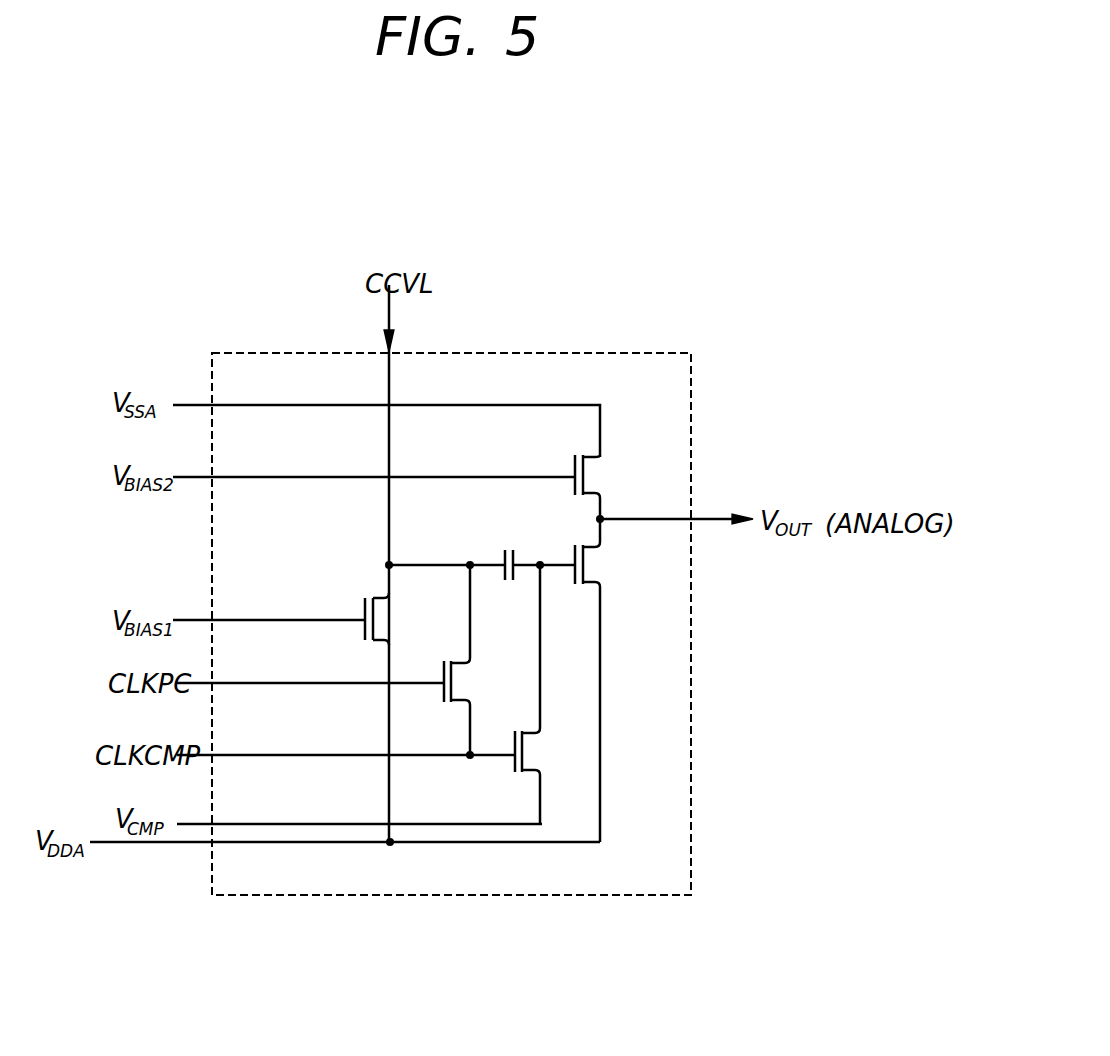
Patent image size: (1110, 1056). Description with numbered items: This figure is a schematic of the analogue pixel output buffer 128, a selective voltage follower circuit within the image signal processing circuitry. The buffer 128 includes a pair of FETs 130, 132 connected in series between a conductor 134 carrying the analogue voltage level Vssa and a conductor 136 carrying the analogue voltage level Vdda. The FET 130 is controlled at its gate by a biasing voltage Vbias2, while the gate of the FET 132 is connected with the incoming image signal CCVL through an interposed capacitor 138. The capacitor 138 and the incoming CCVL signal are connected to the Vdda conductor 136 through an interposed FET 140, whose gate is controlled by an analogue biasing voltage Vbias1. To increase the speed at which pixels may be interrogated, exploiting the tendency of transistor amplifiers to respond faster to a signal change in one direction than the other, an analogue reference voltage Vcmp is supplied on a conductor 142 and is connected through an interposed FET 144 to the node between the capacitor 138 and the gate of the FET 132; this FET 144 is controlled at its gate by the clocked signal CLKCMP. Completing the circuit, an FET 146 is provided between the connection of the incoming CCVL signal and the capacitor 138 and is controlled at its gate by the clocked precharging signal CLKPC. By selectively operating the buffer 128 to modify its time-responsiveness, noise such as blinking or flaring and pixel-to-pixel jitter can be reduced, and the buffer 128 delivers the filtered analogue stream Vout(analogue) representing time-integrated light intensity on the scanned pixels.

The analogue pixel output buffer 128 is at (458, 352).
The FET 130 is at (600, 475).
The FET 132 is at (572, 546).
The conductor 134 is at (468, 404).
The conductor 136 is at (532, 842).
The capacitor 138 is at (498, 548).
The FET 140 is at (375, 592).
The conductor 142 is at (295, 824).
The FET 144 is at (543, 752).
The FET 146 is at (472, 683).